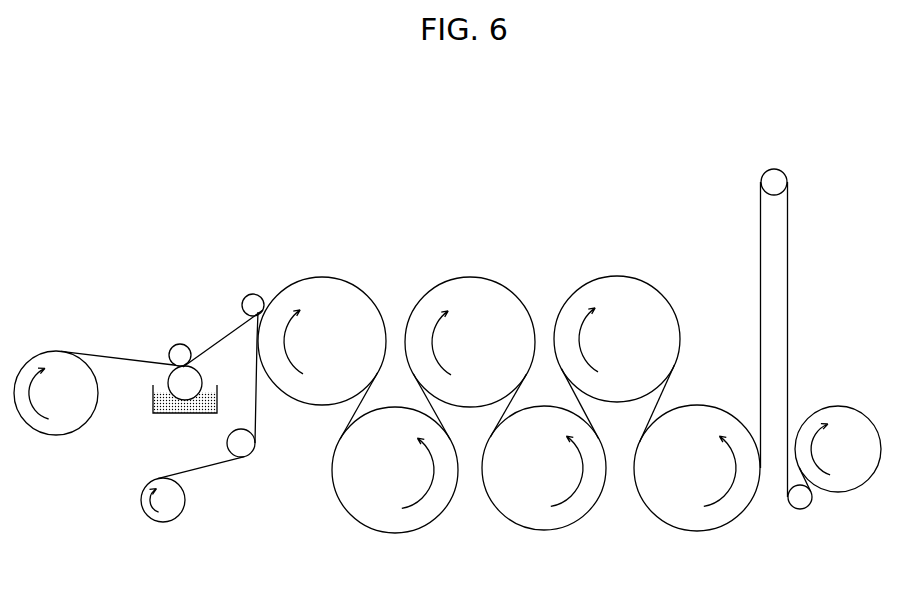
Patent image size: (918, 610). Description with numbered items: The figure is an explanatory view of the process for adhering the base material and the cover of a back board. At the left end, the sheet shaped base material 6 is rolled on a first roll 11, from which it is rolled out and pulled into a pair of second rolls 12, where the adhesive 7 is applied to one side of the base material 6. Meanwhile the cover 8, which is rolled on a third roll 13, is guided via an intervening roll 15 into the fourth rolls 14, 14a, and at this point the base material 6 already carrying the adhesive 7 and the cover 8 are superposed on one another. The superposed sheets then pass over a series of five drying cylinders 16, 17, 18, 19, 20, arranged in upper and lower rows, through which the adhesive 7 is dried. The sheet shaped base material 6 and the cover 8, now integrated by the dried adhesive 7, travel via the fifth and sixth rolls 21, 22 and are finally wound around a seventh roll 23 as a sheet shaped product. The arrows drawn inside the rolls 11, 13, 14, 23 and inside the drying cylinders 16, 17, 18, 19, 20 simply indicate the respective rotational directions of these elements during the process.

The sheet shaped base material 6 is at (115, 358).
The adhesive 7 is at (160, 420).
The cover 8 is at (208, 467).
The first roll 11 is at (53, 358).
The second rolls 12 is at (197, 379).
The third roll 13 is at (168, 512).
The fourth roll 14 is at (327, 288).
The fourth roll 14a is at (255, 298).
The intervening roll 15 is at (247, 445).
The drying cylinder 16 is at (392, 520).
The drying cylinder 17 is at (473, 288).
The drying cylinder 18 is at (543, 520).
The drying cylinder 19 is at (618, 288).
The drying cylinder 20 is at (695, 522).
The fifth roll 21 is at (774, 180).
The sixth roll 22 is at (798, 500).
The seventh roll 23 is at (842, 421).